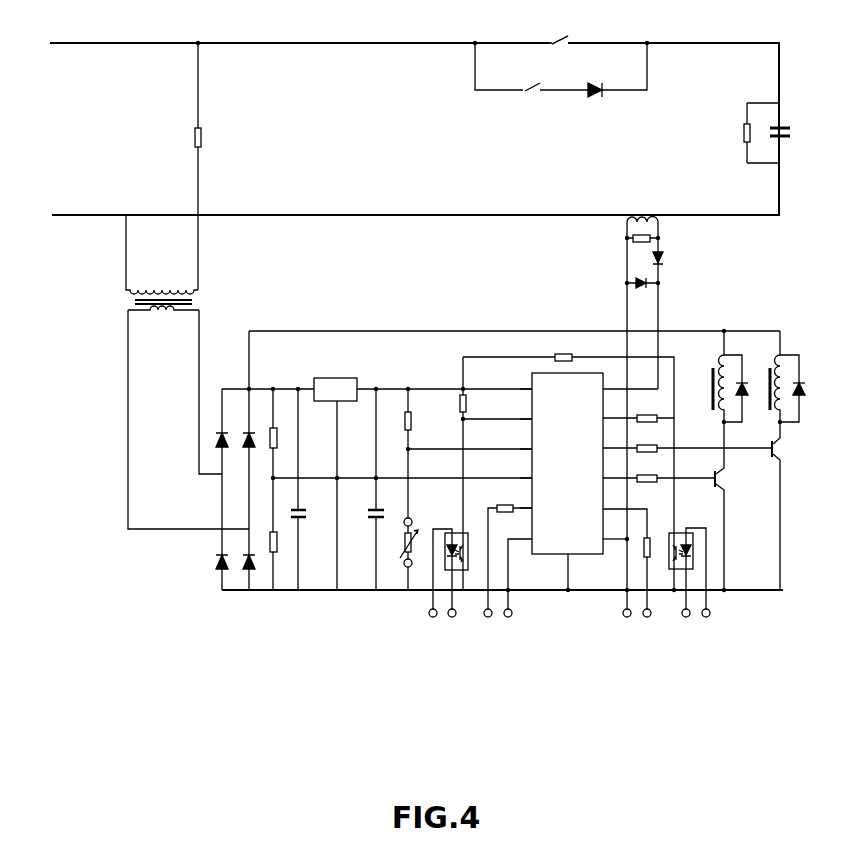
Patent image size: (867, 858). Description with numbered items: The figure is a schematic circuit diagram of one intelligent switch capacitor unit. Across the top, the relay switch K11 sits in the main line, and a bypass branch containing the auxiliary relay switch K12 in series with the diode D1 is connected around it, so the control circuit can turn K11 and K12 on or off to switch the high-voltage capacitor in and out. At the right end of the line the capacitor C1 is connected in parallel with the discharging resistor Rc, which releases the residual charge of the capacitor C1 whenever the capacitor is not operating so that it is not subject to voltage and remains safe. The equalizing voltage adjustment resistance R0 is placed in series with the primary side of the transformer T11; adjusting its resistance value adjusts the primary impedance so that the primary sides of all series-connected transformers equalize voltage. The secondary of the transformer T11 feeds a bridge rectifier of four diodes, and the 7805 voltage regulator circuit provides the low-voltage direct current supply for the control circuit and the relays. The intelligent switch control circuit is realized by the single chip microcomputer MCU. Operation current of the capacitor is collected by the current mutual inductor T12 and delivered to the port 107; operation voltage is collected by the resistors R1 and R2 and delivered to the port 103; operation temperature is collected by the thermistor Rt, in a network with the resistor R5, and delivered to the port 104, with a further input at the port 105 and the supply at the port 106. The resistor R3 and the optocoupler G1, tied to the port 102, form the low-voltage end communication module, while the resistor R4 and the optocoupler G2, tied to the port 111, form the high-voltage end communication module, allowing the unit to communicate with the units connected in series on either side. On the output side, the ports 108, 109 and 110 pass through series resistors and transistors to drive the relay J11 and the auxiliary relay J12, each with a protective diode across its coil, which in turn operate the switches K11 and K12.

The equalizing voltage adjustment resistance R0 is at (207, 166).
The relay switch K11 is at (559, 32).
The auxiliary relay switch K12 is at (531, 99).
The diode D1 is at (595, 99).
The discharging resistor Rc is at (736, 133).
The capacitor C1 is at (790, 133).
The transformer T11 is at (175, 263).
The current mutual inductor T12 is at (644, 243).
The voltage regulator circuit 7805 is at (335, 484).
The resistor R1 is at (283, 460).
The resistor R2 is at (283, 561).
The resistor R3 is at (508, 553).
The resistor R4 is at (655, 568).
The resistor R5 is at (398, 452).
The thermistor Rt is at (400, 554).
The optocoupler G1 is at (448, 565).
The optocoupler G2 is at (689, 564).
The relay J11 is at (724, 461).
The auxiliary relay J12 is at (781, 460).
The single chip microcomputer MCU is at (646, 482).
The port 102 is at (540, 508).
The port 103 is at (540, 478).
The port 104 is at (540, 449).
The port 105 is at (540, 419).
The port 106 is at (540, 389).
The port 107 is at (616, 389).
The port 108 is at (624, 419).
The port 109 is at (673, 449).
The port 110 is at (645, 478).
The port 111 is at (611, 519).